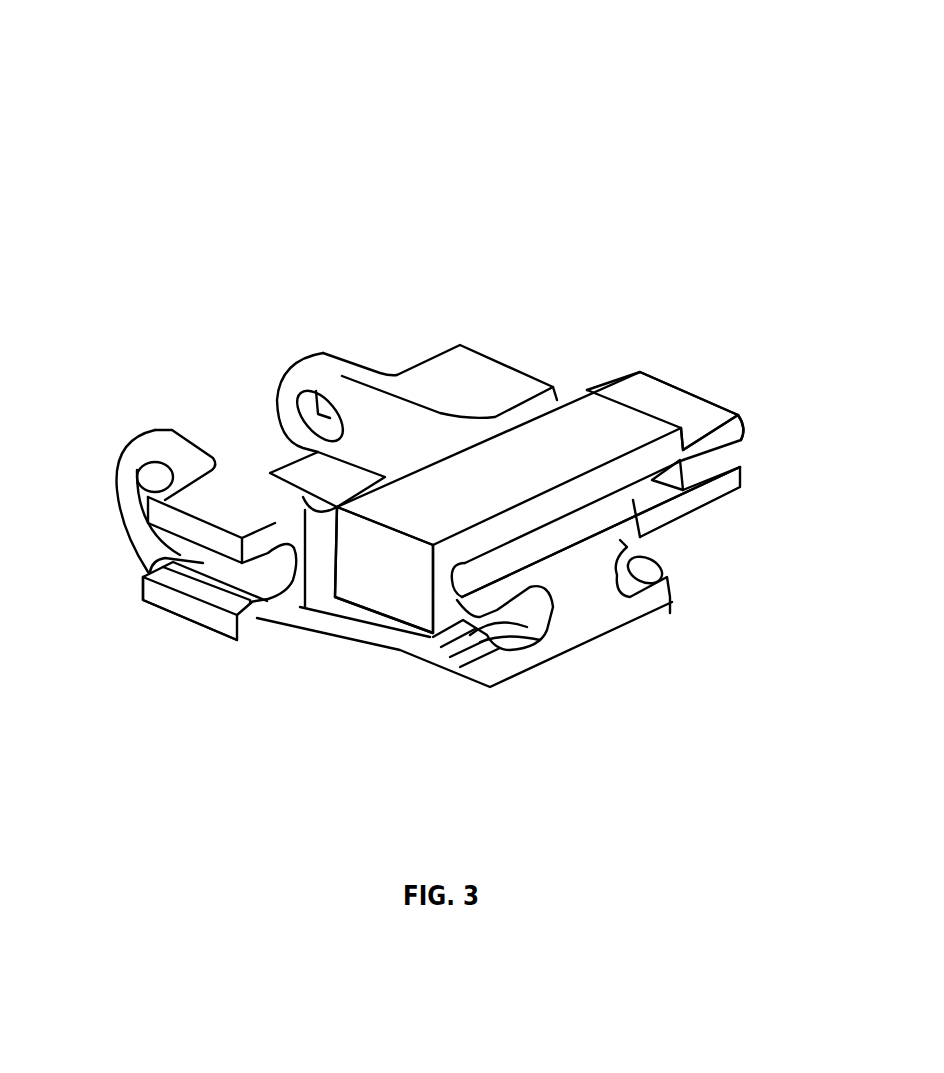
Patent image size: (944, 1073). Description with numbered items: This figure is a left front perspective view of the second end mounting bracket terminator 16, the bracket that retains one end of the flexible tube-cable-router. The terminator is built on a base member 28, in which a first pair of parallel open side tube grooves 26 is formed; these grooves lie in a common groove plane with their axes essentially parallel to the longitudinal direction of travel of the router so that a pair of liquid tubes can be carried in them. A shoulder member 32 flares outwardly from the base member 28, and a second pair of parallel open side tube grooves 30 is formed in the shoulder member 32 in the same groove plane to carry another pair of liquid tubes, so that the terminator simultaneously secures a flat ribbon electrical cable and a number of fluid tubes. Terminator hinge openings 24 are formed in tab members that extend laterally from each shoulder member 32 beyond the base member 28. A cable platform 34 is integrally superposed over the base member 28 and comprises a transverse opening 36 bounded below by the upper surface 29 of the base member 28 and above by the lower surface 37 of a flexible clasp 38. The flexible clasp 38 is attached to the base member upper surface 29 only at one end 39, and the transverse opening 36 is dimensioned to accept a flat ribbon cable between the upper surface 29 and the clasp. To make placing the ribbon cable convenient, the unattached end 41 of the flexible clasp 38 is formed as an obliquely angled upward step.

The second end mounting bracket terminator 16 is at (593, 213).
The terminator hinge openings 24 is at (142, 477).
The first pair of parallel open side tube grooves 26 is at (297, 412).
The base member 28 is at (571, 647).
The upper surface of base member 29 is at (585, 543).
The second pair of parallel open side tube grooves 30 is at (143, 578).
The shoulder member 32 is at (187, 630).
The cable platform 34 is at (678, 402).
The transverse opening 36 is at (631, 502).
The lower surface of flexible clasp 37 is at (563, 517).
The flexible clasp 38 is at (610, 443).
The attached end of flexible clasp 39 is at (397, 588).
The unattached end of flexible clasp 41 is at (743, 430).